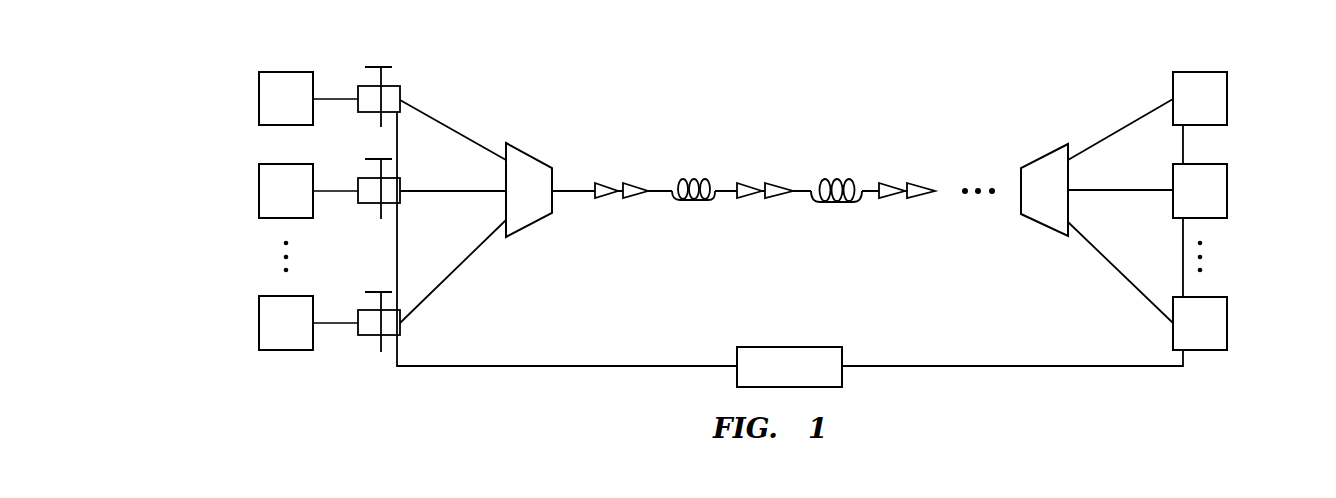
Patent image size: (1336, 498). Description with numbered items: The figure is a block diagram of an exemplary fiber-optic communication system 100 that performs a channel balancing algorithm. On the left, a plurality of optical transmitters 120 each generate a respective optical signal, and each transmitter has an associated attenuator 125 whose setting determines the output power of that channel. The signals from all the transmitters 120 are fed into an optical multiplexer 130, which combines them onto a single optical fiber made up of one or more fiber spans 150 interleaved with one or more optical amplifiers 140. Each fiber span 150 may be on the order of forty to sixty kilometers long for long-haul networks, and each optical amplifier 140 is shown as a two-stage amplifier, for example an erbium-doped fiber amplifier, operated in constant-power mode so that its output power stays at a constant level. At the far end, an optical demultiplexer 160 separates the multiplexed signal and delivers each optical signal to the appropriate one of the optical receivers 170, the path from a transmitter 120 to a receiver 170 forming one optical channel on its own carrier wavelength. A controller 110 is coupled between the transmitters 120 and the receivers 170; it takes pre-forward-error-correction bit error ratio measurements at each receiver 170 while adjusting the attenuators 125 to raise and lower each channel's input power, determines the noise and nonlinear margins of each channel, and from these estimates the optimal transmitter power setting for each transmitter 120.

The fiber-optic communication system 100 is at (873, 85).
The controller 110 is at (797, 347).
The optical transmitters 120 is at (259, 99).
The attenuators 125 is at (400, 86).
The optical multiplexer 130 is at (532, 156).
The optical amplifiers 140 is at (608, 198).
The fiber spans 150 is at (687, 202).
The optical demultiplexer 160 is at (1040, 223).
The optical receivers 170 is at (1227, 99).